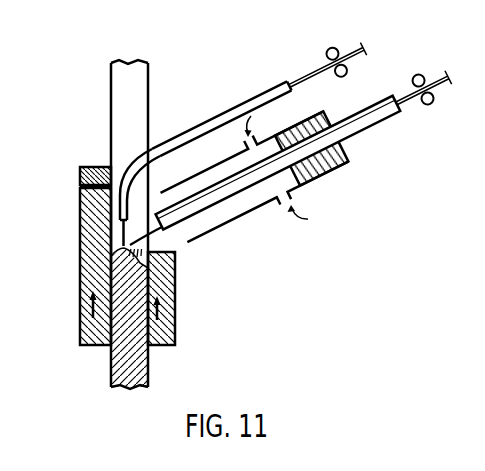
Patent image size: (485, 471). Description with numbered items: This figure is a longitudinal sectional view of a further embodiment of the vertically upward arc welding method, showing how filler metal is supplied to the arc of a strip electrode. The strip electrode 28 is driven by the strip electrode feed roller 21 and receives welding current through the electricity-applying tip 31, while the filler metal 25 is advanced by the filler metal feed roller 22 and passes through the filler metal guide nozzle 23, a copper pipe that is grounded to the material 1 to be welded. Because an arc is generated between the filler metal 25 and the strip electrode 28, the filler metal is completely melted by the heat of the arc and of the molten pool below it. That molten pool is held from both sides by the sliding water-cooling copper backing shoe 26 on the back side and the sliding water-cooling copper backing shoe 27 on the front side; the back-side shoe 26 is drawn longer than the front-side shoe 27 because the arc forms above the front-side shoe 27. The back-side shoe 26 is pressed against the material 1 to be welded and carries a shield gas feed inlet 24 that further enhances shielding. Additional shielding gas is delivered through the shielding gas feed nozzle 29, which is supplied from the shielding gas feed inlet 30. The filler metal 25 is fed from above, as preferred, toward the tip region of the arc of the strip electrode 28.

The material to be welded 1 is at (117, 360).
The strip electrode feed roller 21 is at (417, 72).
The filler metal feed roller 22 is at (327, 50).
The filler metal guide nozzle 23 is at (206, 121).
The shield gas feed inlet 24 is at (80, 185).
The filler metal 25 is at (122, 248).
The sliding water-cooling copper backing shoe on the back side 26 is at (80, 297).
The sliding water-cooling copper backing shoe on the front side 27 is at (170, 306).
The strip electrode 28 is at (167, 232).
The shielding gas feed nozzle 29 is at (236, 221).
The shielding gas feed inlet 30 is at (297, 202).
The electricity-applying tip 31 is at (362, 133).